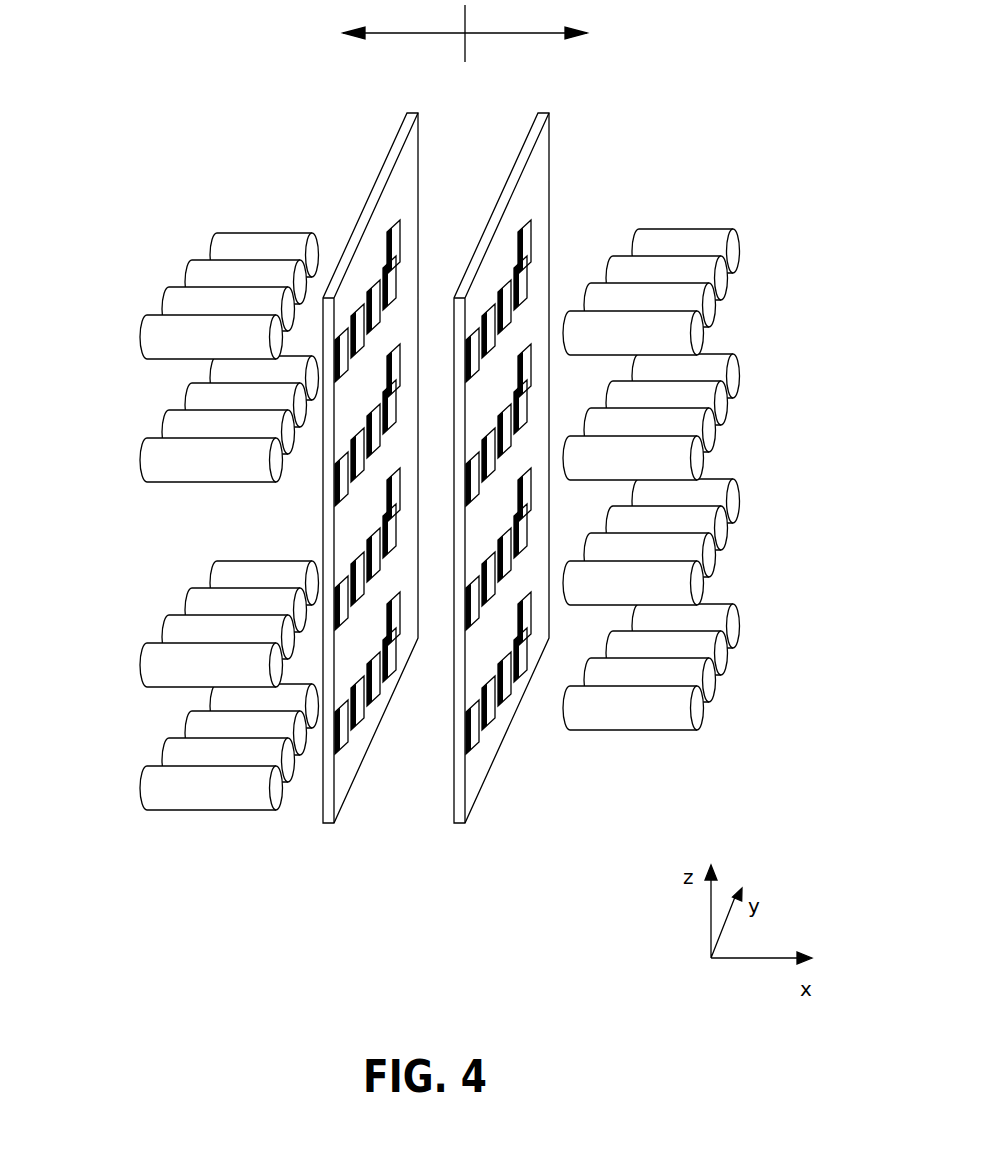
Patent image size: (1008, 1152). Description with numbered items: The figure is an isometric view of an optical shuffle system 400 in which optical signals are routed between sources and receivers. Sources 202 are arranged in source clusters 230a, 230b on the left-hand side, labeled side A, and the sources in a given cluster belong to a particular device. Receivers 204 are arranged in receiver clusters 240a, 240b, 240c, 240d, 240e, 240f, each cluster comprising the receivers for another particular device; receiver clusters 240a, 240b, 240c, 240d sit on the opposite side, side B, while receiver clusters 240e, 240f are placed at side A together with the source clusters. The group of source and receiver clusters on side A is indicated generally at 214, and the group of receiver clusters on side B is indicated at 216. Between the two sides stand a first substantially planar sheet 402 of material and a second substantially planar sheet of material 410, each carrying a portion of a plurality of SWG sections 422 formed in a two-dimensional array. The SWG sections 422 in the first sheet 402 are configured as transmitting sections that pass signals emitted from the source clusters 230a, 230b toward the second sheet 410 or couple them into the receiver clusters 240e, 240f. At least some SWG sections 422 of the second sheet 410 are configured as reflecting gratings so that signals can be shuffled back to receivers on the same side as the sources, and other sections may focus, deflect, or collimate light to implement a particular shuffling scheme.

The optical shuffle system 400 is at (205, 85).
The first optical fiber bundle 214 is at (148, 236).
The second optical fiber bundle 216 is at (648, 194).
The source cluster 230a is at (150, 300).
The source cluster 230b is at (150, 410).
The receiver cluster 240a is at (758, 300).
The receiver cluster 240b is at (740, 436).
The receiver cluster 240c is at (740, 561).
The receiver cluster 240d is at (740, 686).
The receiver cluster 240e is at (148, 617).
The receiver cluster 240f is at (160, 741).
The sources 202 is at (194, 453).
The receivers 204 is at (360, 783).
The first substantially planar sheet 402 is at (446, 499).
The second substantially planar sheet of material 410 is at (476, 825).
The SWG sections 422 is at (367, 706).